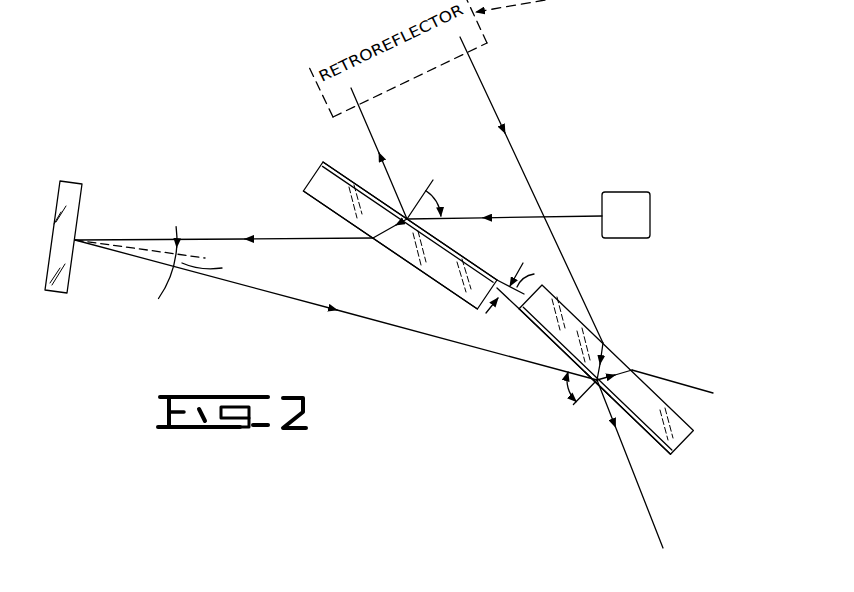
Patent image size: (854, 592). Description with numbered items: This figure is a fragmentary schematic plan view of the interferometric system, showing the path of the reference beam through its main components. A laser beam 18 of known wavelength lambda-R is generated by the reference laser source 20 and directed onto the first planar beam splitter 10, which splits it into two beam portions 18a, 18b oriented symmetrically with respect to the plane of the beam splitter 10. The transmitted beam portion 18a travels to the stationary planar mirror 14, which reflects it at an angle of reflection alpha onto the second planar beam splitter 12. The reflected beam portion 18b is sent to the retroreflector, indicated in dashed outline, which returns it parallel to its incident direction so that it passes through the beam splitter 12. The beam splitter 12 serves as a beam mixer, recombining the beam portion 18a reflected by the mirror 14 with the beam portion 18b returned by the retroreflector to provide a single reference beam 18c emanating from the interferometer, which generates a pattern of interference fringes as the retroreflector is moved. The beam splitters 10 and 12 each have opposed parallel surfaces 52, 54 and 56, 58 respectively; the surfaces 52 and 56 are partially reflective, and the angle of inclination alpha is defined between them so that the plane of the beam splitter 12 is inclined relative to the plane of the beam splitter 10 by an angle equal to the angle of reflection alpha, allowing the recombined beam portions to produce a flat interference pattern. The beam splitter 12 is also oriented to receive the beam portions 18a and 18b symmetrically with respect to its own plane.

The beam splitter 10 is at (371, 215).
The beam splitter 12 is at (604, 382).
The planar mirror 14 is at (83, 181).
The laser beam 18 is at (510, 215).
The beam portion 18a is at (222, 237).
The beam portion 18b is at (389, 173).
The reference beam 18c is at (632, 470).
The reference laser source 20 is at (624, 192).
The partially reflective surface 52 is at (340, 174).
The surface 54 is at (427, 274).
The partially reflective surface 56 is at (547, 336).
The surface 58 is at (605, 372).